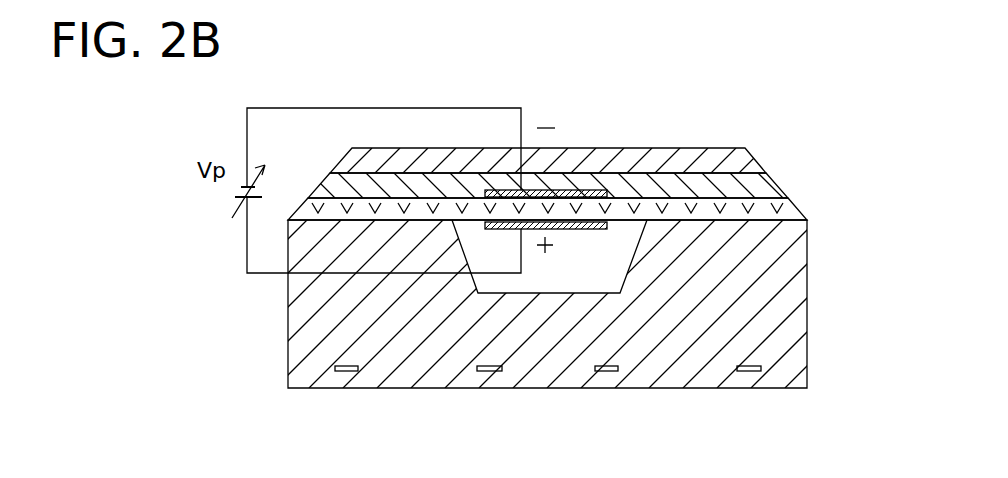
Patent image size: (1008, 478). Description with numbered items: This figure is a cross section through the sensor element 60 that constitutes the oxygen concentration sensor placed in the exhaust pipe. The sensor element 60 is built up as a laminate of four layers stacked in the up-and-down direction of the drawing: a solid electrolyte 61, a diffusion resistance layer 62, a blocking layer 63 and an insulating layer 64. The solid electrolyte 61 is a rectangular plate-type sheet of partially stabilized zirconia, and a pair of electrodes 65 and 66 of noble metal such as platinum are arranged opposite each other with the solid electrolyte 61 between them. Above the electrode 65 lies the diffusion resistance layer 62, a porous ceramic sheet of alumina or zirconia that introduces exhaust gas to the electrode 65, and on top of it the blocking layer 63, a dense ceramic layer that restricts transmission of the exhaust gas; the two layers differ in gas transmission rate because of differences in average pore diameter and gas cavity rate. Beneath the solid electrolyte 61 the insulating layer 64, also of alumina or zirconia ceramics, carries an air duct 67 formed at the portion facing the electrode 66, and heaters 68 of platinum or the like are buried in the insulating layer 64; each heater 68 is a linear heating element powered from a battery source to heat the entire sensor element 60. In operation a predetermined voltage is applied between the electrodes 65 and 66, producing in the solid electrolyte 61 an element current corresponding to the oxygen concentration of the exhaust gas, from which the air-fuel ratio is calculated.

The sensor element 60 is at (781, 102).
The solid electrolyte 61 is at (797, 211).
The diffusion resistance layer 62 is at (768, 184).
The blocking layer 63 is at (748, 152).
The insulating layer 64 is at (797, 293).
The electrode 65 is at (580, 190).
The electrode 66 is at (598, 222).
The air duct 67 is at (565, 294).
The heaters 68 is at (355, 372).